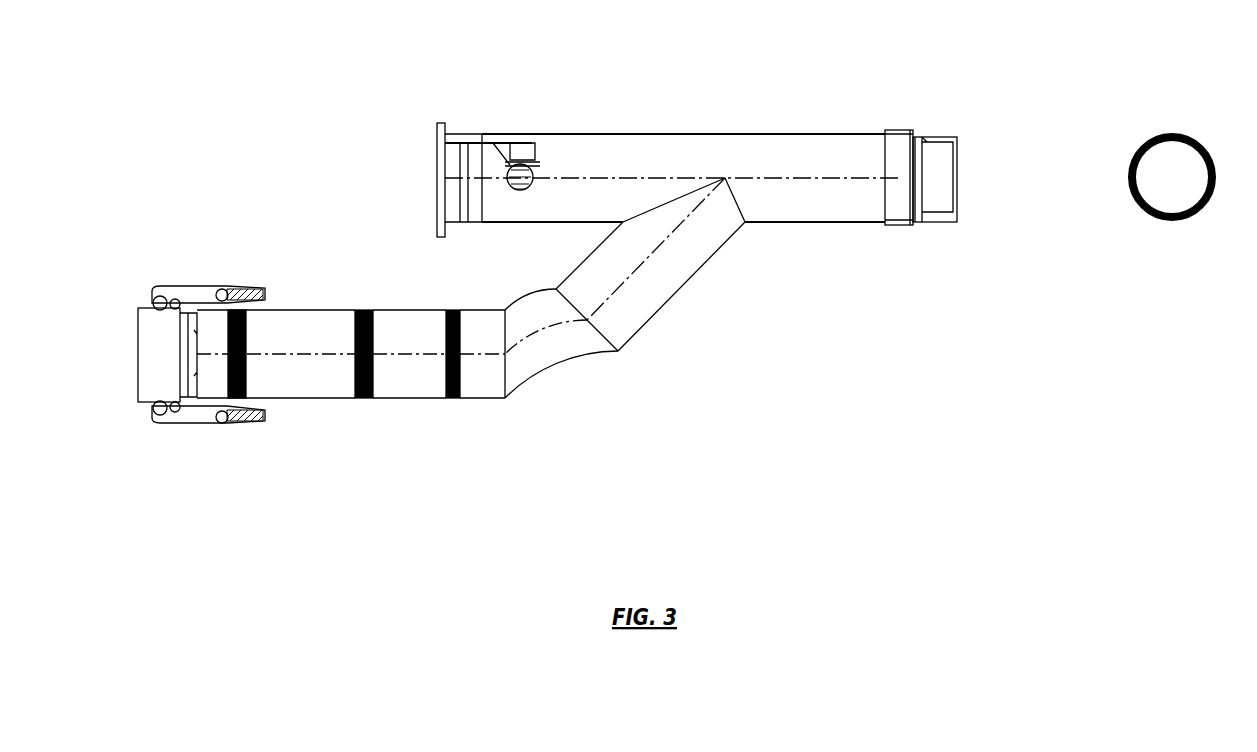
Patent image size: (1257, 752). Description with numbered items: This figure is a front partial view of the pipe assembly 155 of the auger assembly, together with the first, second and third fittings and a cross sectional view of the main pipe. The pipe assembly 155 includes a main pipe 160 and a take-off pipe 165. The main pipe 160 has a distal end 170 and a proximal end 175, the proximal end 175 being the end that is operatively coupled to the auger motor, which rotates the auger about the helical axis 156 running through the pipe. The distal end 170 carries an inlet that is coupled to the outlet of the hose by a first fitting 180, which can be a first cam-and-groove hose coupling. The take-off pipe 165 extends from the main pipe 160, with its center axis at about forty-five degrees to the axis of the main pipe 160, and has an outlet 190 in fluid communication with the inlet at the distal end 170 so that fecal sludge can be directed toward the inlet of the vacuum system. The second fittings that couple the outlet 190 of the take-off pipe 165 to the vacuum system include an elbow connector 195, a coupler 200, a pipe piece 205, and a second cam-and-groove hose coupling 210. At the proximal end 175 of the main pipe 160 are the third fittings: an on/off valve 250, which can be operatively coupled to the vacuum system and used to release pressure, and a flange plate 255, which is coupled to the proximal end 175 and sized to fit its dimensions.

The pipe assembly 155 is at (803, 260).
The helical axis 156 is at (577, 170).
The main pipe 160 is at (750, 133).
The take-off pipe 165 is at (677, 293).
The distal end 170 is at (884, 131).
The proximal end 175 is at (490, 132).
The first fitting 180 is at (953, 136).
The outlet 190 is at (558, 282).
The elbow connector 195 is at (615, 404).
The coupler 200 is at (450, 296).
The pipe piece 205 is at (380, 404).
The second cam-and-groove hose coupling 210 is at (152, 408).
The on/off valve 250 is at (502, 188).
The flange plate 255 is at (482, 122).